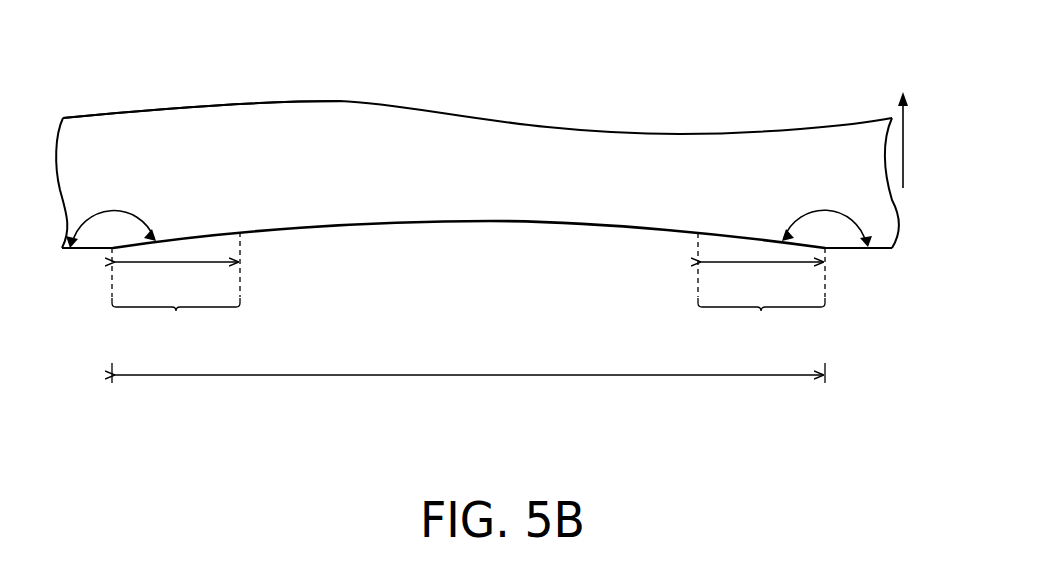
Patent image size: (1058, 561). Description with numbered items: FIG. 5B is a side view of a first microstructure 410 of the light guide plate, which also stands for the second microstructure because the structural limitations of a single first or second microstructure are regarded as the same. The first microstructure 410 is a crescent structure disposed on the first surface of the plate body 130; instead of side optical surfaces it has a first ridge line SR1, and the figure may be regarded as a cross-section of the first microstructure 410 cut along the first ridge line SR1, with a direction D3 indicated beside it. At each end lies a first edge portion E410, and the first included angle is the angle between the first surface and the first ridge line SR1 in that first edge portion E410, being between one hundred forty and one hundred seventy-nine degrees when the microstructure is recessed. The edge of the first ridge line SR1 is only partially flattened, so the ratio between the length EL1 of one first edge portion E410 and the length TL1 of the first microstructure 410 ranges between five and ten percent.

The first microstructure 410 is at (846, 463).
The plate body 130 is at (80, 145).
The first ridge line SR1 is at (488, 222).
The direction D3 is at (919, 140).
The length of first edge portion EL1 is at (468, 266).
The first edge portion E410 is at (468, 323).
The length of first microstructure TL1 is at (468, 360).